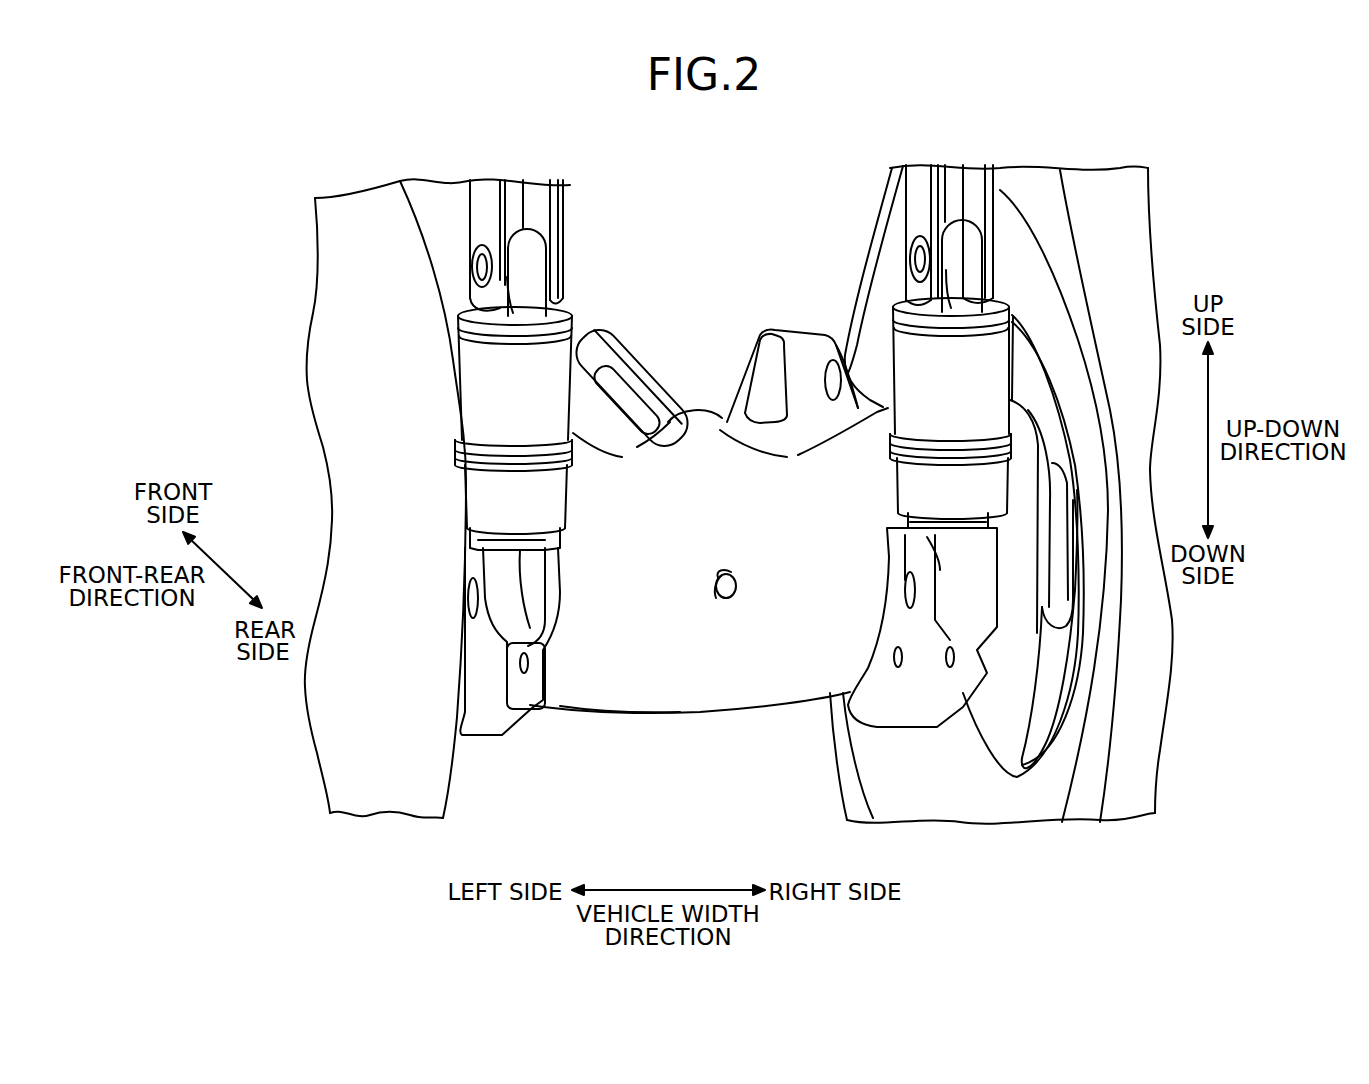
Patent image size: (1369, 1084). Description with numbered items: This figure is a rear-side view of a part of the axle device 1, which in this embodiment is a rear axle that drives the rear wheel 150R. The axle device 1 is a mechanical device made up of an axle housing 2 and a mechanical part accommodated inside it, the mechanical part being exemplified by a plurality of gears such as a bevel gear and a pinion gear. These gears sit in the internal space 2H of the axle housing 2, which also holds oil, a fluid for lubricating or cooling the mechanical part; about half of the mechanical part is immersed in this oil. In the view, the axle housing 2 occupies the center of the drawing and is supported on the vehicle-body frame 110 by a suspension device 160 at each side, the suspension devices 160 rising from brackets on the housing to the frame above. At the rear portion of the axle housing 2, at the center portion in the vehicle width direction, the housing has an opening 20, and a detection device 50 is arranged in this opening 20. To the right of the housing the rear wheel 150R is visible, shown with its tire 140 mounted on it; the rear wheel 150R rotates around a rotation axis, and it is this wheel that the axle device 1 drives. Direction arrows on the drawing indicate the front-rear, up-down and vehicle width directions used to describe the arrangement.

The axle device 1 is at (602, 678).
The axle housing 2 is at (638, 680).
The internal space 2H is at (681, 607).
The opening 20 is at (713, 584).
The detection device 50 is at (745, 600).
The vehicle-body frame 110 is at (741, 200).
The tire 140 is at (1130, 737).
The rear wheel 150R is at (1023, 720).
The suspension device 160 is at (486, 372).